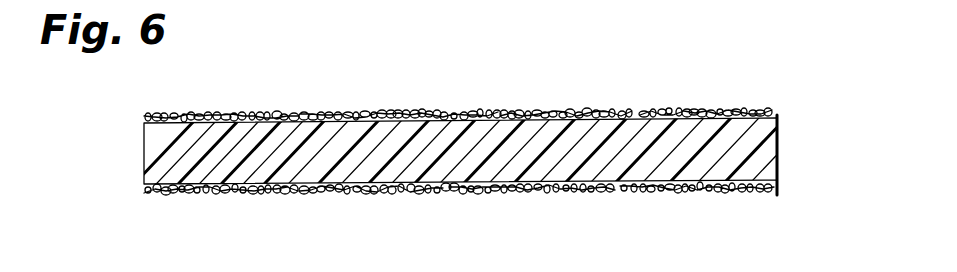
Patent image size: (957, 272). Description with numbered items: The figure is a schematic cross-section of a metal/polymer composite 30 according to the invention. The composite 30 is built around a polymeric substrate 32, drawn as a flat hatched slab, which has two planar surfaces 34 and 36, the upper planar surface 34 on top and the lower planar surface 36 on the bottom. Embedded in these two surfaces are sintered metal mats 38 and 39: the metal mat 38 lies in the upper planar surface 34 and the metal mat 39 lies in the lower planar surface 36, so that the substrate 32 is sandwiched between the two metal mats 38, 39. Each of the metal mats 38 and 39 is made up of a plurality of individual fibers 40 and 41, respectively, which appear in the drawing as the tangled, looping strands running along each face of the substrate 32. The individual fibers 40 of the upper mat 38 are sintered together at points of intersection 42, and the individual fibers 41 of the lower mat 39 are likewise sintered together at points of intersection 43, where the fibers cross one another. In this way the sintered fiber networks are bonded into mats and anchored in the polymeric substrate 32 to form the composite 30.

The composite 30 is at (134, 152).
The polymeric substrate 32 is at (763, 155).
The planar surface 34 is at (745, 102).
The planar surface 36 is at (688, 202).
The sintered metal mat 38 is at (211, 116).
The sintered metal mat 39 is at (200, 198).
The individual fibers 40 is at (432, 108).
The individual fibers 41 is at (400, 188).
The points of intersection 42 is at (517, 108).
The points of intersection 43 is at (480, 202).